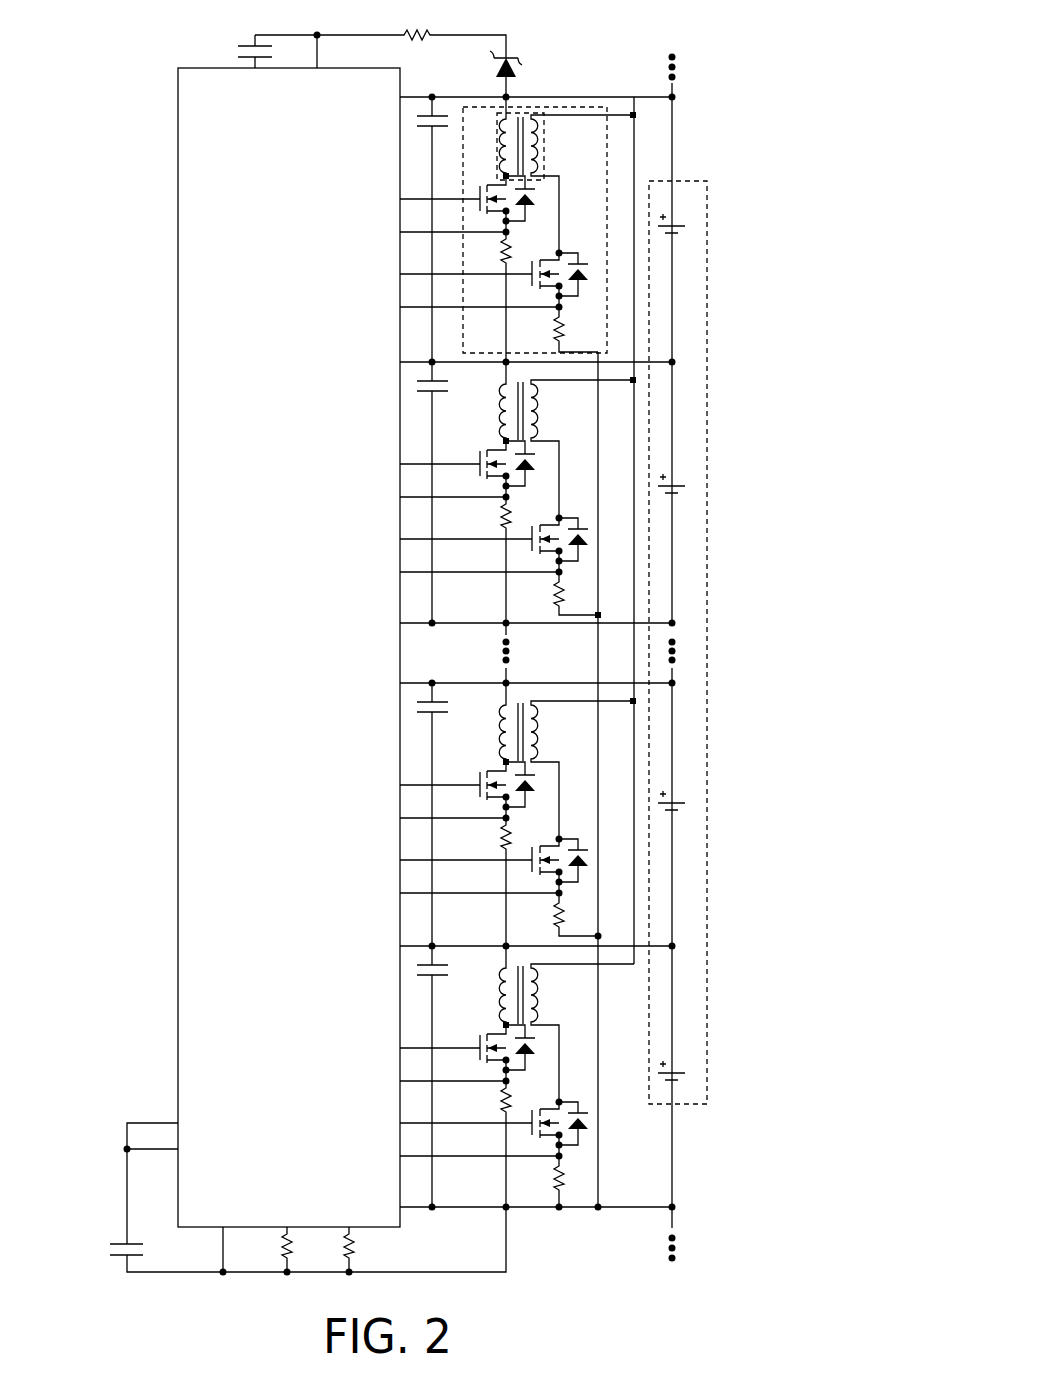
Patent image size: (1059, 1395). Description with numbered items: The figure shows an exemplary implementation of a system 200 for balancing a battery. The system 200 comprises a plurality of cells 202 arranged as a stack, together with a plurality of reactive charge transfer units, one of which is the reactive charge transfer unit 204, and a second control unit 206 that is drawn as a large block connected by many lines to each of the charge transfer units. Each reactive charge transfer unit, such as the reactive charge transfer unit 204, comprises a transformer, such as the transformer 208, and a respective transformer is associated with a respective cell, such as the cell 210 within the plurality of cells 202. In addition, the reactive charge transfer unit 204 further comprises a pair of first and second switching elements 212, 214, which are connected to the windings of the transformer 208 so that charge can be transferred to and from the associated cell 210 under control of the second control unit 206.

The system 200 is at (708, 48).
The plurality of cells 202 is at (732, 642).
The reactive charge transfer unit 204 is at (562, 107).
The second control unit 206 is at (308, 657).
The transformer 208 is at (544, 147).
The cell 210 is at (685, 226).
The first switching element 212 is at (530, 197).
The second switching element 214 is at (580, 277).